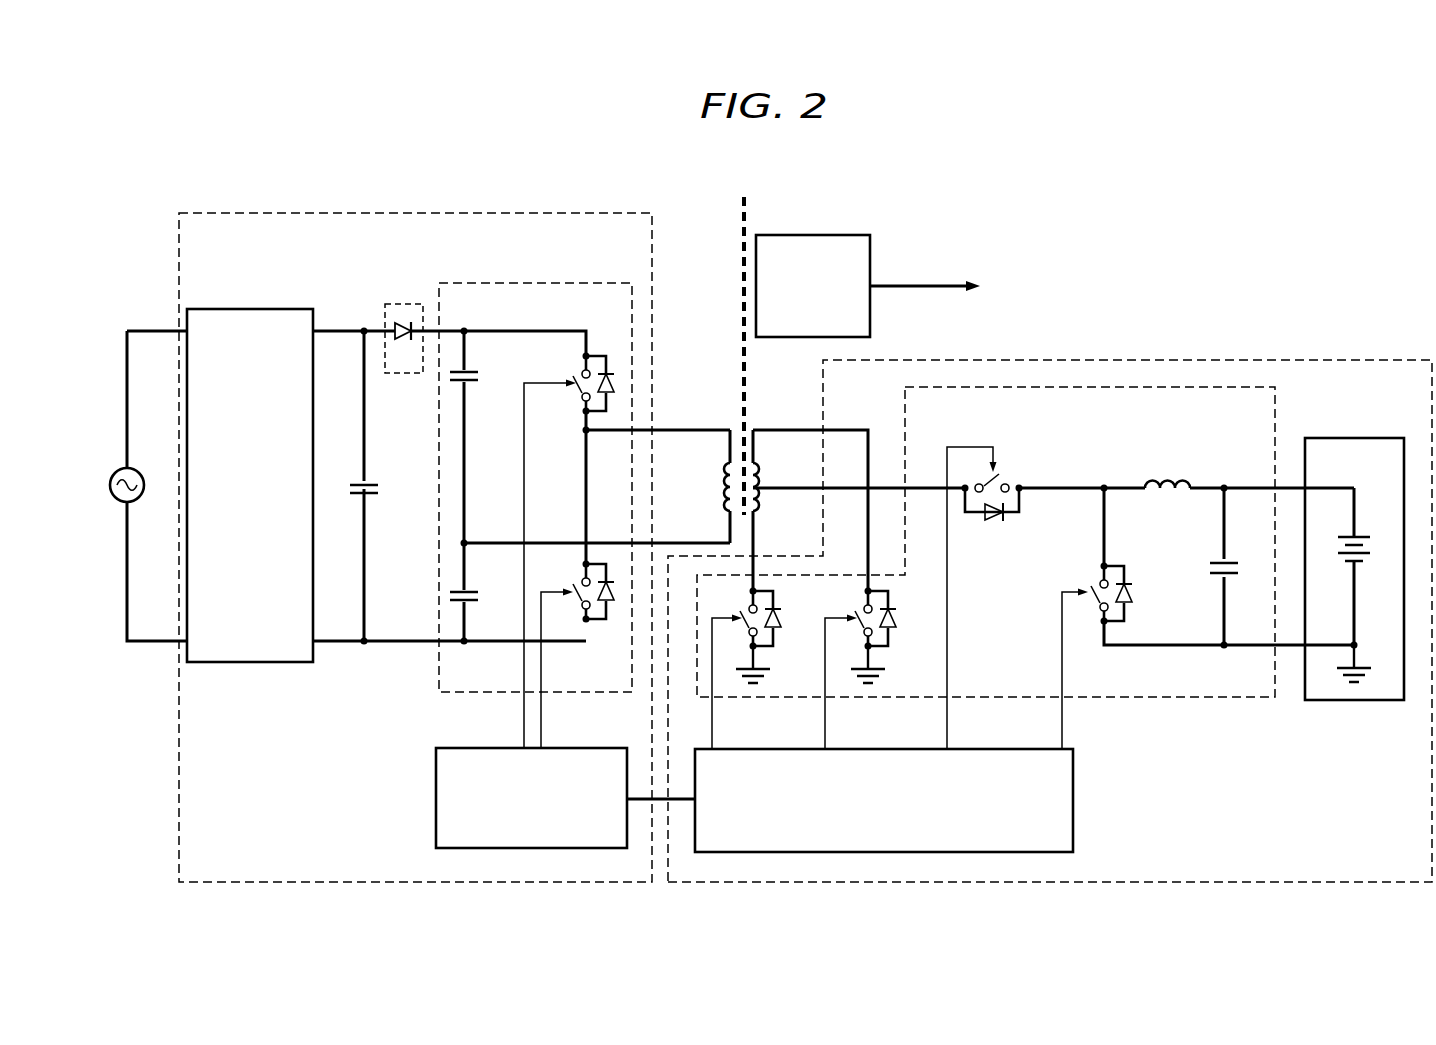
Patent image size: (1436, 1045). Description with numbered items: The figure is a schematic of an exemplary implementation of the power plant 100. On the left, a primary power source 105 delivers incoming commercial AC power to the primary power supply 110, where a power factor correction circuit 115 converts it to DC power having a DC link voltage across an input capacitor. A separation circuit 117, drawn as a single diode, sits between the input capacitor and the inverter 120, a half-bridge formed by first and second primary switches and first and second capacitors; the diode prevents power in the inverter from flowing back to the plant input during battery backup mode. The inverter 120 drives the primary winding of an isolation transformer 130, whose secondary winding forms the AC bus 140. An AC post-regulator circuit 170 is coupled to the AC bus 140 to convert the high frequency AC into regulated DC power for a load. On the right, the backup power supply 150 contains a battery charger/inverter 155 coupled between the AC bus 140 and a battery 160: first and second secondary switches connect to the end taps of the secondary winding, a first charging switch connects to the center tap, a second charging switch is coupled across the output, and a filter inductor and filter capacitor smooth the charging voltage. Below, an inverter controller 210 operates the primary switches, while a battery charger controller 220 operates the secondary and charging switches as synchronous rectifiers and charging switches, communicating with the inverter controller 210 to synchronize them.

The power plant 100 is at (1013, 232).
The primary power source 105 is at (140, 470).
The primary power supply 110 is at (410, 884).
The power factor correction circuit 115 is at (250, 308).
The separation circuit 117 is at (405, 303).
The inverter 120 is at (530, 282).
The isolation transformer 130 is at (733, 425).
The AC bus 140 is at (757, 222).
The backup power supply 150 is at (1050, 885).
The battery charger/inverter 155 is at (1275, 433).
The battery 160 is at (1352, 700).
The AC post-regulator circuit 170 is at (870, 313).
The inverter controller 210 is at (436, 796).
The battery charger controller 220 is at (1073, 800).